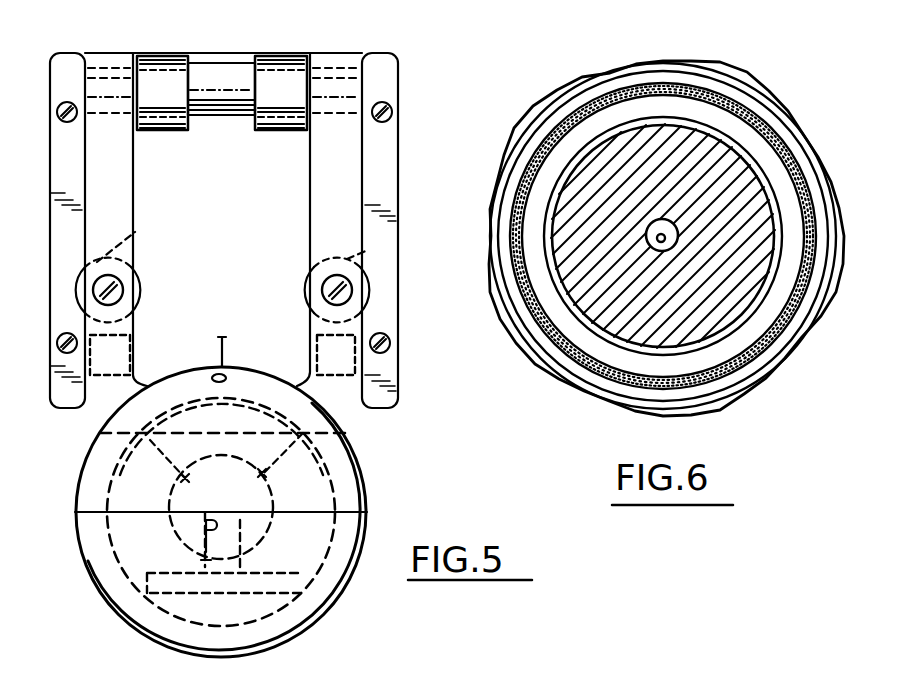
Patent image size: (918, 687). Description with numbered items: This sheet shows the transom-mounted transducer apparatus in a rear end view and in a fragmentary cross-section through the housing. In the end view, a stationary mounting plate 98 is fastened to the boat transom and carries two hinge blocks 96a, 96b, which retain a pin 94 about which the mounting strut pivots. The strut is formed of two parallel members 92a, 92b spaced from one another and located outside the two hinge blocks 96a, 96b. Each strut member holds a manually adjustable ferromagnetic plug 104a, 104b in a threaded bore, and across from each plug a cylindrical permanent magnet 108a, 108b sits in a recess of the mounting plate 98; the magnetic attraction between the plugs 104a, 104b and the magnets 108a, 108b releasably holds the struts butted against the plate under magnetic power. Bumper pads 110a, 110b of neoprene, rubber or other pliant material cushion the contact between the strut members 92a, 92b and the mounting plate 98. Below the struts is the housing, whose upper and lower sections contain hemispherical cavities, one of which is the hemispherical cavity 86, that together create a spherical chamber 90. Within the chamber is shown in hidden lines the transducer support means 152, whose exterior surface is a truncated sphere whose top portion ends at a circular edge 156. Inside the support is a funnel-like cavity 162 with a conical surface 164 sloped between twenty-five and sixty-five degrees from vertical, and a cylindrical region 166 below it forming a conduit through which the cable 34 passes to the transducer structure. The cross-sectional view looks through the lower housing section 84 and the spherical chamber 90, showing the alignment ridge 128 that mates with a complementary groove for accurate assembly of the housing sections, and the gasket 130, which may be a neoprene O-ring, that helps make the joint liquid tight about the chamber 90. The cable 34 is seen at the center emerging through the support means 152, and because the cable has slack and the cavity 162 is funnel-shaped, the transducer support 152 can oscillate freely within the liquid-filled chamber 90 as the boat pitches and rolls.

In FIG. 5, the mounting plate 98 is at (246, 168).
In FIG. 5, the strut member 92a is at (105, 78).
In FIG. 5, the strut member 92b is at (353, 153).
In FIG. 5, the hinge block 96a is at (165, 55).
In FIG. 5, the hinge block 96b is at (285, 55).
In FIG. 5, the pin 94 is at (222, 75).
In FIG. 5, the ferromagnetic plug 104a is at (127, 287).
In FIG. 5, the ferromagnetic plug 104b is at (307, 275).
In FIG. 5, the cylindrical magnet 108a is at (143, 229).
In FIG. 5, the cylindrical magnet 108b is at (368, 250).
In FIG. 5, the bumper pad 110a is at (140, 328).
In FIG. 5, the bumper pad 110b is at (316, 340).
In FIG. 5, the hemispherical cavity 86 is at (368, 485).
In FIG. 5, the transducer support means 152 is at (148, 497).
In FIG. 6, the transducer support means 152 is at (740, 153).
In FIG. 5, the funnel-like cavity 162 is at (108, 434).
In FIG. 5, the circular edge 156 is at (355, 433).
In FIG. 5, the conical surface 164 is at (262, 433).
In FIG. 5, the cylindrical region 166 is at (185, 550).
In FIG. 6, the lower housing section 84 is at (685, 63).
In FIG. 6, the alignment ridge 128 is at (610, 78).
In FIG. 6, the gasket 130 is at (702, 92).
In FIG. 6, the spherical chamber 90 is at (580, 152).
In FIG. 6, the cable 34 is at (650, 230).